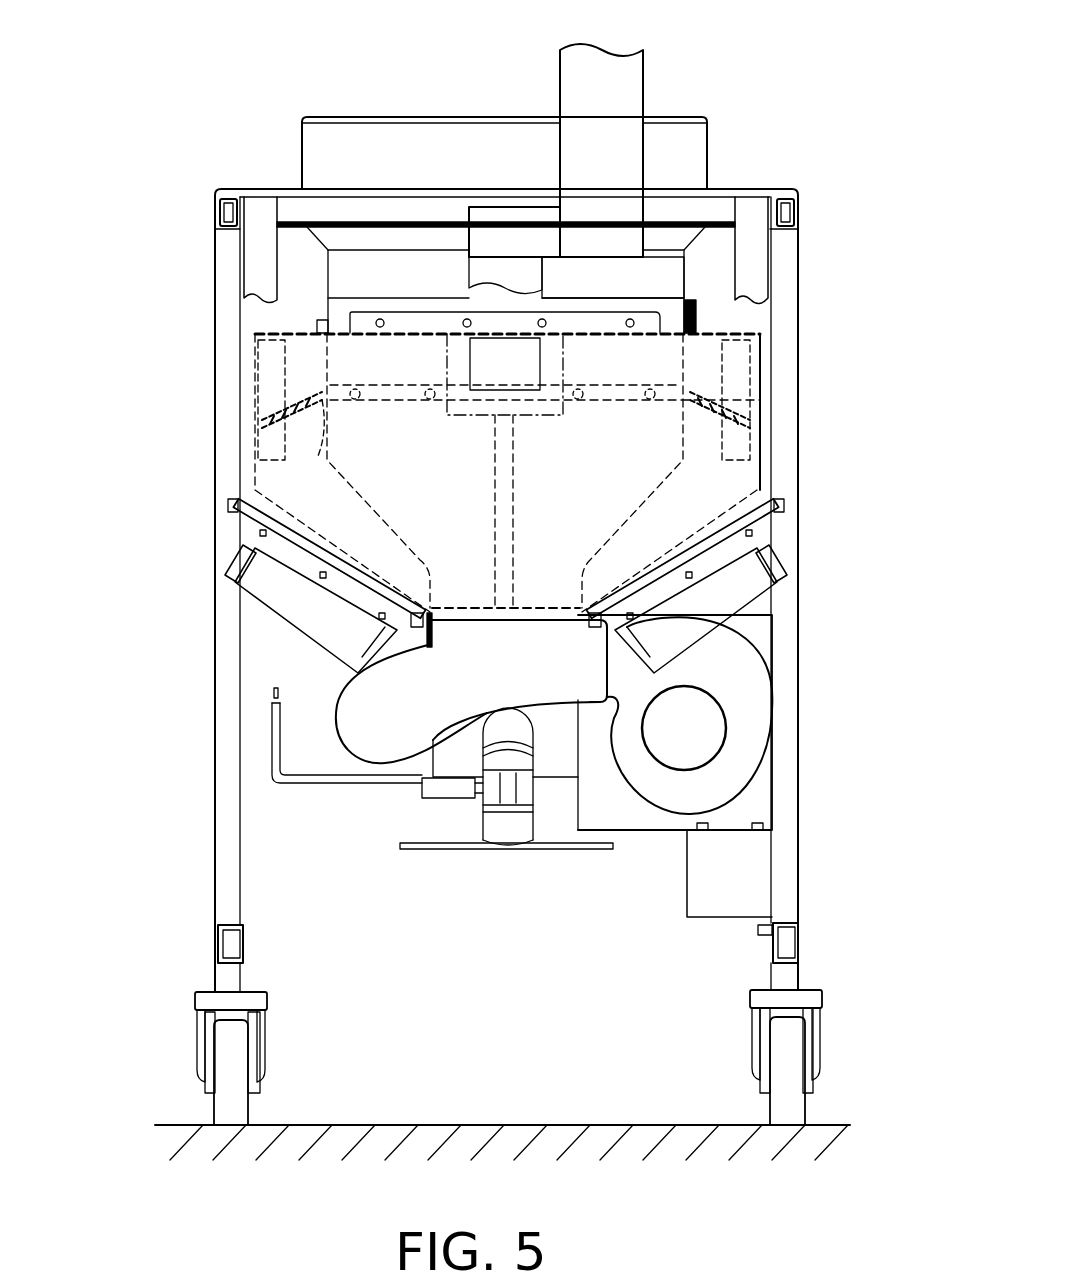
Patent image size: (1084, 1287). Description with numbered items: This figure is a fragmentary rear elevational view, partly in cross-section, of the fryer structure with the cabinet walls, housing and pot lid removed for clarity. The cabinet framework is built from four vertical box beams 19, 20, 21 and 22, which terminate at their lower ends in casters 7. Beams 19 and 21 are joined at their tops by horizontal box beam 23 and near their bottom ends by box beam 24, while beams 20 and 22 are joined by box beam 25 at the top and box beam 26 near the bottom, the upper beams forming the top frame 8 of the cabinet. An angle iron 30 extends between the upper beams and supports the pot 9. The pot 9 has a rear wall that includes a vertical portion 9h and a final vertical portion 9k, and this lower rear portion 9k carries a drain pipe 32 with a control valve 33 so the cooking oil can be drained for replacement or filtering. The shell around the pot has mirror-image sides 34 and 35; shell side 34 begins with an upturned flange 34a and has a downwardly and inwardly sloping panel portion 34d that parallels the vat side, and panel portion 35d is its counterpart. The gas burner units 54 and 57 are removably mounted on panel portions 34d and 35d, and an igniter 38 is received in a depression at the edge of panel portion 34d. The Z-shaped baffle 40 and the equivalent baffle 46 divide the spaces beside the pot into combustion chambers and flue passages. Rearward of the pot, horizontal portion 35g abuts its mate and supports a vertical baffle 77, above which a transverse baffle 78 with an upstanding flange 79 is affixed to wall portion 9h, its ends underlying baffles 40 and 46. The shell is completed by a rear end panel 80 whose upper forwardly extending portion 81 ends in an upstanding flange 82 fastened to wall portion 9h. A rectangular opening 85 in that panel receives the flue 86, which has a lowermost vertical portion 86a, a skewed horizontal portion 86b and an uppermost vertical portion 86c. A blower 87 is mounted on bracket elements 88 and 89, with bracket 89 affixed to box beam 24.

The casters 7 is at (233, 1113).
The top frame 8 is at (757, 188).
The pot 9 is at (685, 130).
The vertical portion of pot rear wall 9h is at (646, 445).
The final vertical portion of pot rear wall 9k is at (569, 760).
The vertical box beam 19 is at (222, 322).
The vertical box beam 20 is at (793, 305).
The vertical box beam 21 is at (260, 276).
The vertical box beam 22 is at (745, 273).
The horizontal box beam 23 is at (233, 228).
The box beam 24 is at (245, 938).
The box beam 25 is at (785, 228).
The box beam 26 is at (800, 940).
The angle iron 30 is at (308, 200).
The drain pipe 32 is at (500, 835).
The control valve 33 is at (495, 803).
The shell side 34 is at (242, 418).
The upturned flange 34a is at (494, 560).
The panel portion 34d is at (361, 583).
The shell side 35 is at (772, 417).
The panel portion 35d is at (700, 562).
The panel portion 35g is at (518, 538).
The igniter 38 is at (470, 622).
The Z-shaped baffle 40 is at (316, 440).
The longitudinal baffle 46 is at (762, 390).
The gas burner unit 54 is at (238, 583).
The gas burner unit 57 is at (740, 603).
The vertical baffle 77 is at (522, 479).
The transverse baffle 78 is at (368, 410).
The upstanding flange 79 is at (370, 380).
The rear end panel 80 is at (712, 482).
The forwardly extending portion 81 is at (713, 332).
The upstanding flange 82 is at (563, 325).
The rectangular opening 85 is at (545, 372).
The pressure cooker flue 86 is at (598, 150).
The lowermost vertical portion 86a is at (483, 273).
The skewed horizontal portion 86b is at (503, 228).
The vertical portion 86c is at (643, 78).
The blower 87 is at (747, 690).
The bracket element 88 is at (753, 805).
The bracket element 89 is at (752, 883).